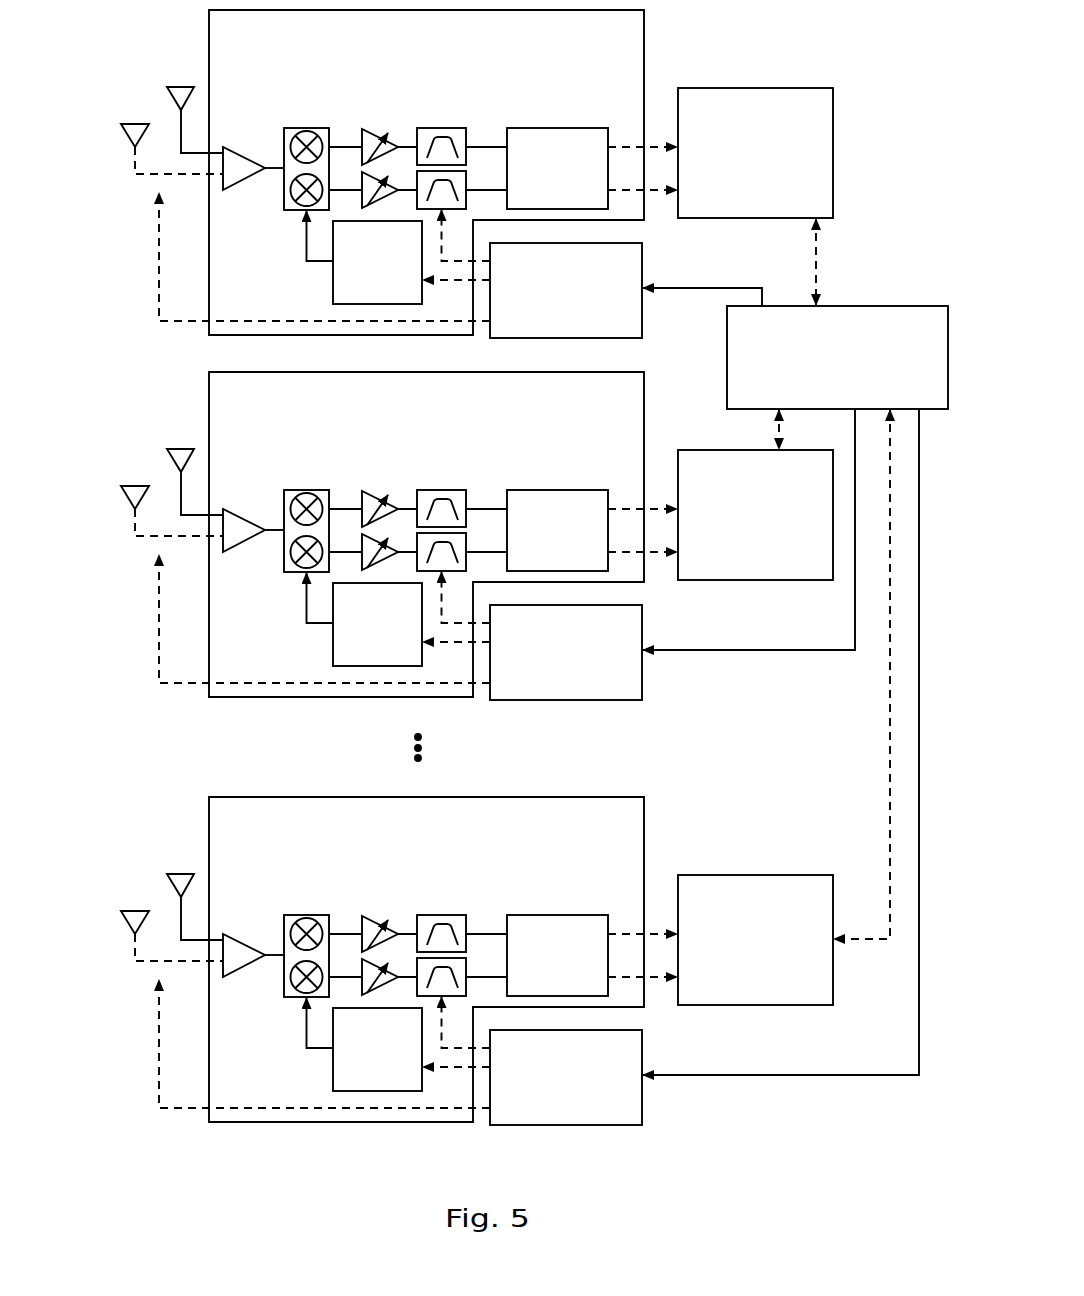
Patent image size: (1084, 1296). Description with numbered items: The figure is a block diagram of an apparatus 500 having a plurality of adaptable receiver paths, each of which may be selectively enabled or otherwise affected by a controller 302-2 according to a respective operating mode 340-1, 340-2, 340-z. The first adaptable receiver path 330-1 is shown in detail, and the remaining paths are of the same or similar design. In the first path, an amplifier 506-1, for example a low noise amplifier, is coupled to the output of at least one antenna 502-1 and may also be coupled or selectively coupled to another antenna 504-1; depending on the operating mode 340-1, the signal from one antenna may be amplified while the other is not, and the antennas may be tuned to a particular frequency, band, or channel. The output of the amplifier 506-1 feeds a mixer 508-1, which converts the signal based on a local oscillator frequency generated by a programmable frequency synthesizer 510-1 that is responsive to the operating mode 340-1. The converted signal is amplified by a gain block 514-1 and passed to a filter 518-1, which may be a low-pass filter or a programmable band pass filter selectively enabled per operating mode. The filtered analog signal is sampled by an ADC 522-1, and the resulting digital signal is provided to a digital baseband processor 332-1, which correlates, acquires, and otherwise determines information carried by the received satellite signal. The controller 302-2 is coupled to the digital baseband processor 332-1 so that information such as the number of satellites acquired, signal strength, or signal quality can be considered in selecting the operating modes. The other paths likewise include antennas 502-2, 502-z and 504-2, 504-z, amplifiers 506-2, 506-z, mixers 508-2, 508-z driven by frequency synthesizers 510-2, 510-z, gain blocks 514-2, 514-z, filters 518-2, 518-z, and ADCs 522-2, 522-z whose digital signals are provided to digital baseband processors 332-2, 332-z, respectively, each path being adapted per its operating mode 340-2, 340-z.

The apparatus 500 is at (781, 32).
The adaptable receiver path 330-1 is at (371, 174).
The controller 302-2 is at (807, 398).
The digital baseband processor 332-1 is at (725, 205).
The digital baseband processor 332-2 is at (755, 515).
The digital baseband processor 332-z is at (755, 940).
The operating mode 340-1 is at (630, 318).
The operating mode 340-2 is at (400, 627).
The operating mode 340-z is at (400, 1052).
The antenna 502-1 is at (157, 103).
The antenna 502-2 is at (157, 465).
The antenna 502-z is at (157, 890).
The antenna 504-1 is at (144, 134).
The antenna 504-2 is at (144, 496).
The antenna 504-z is at (144, 921).
The amplifier 506-1 is at (271, 130).
The amplifier 506-2 is at (271, 492).
The amplifier 506-z is at (271, 917).
The mixer 508-1 is at (334, 149).
The mixer 508-2 is at (334, 511).
The mixer 508-z is at (334, 936).
The frequency synthesizer 510-1 is at (326, 258).
The frequency synthesizer 510-2 is at (326, 620).
The frequency synthesizer 510-z is at (326, 1045).
The gain block 514-1 is at (423, 132).
The gain block 514-2 is at (423, 494).
The gain block 514-z is at (423, 919).
The filter 518-1 is at (469, 148).
The filter 518-2 is at (469, 510).
The filter 518-z is at (468, 935).
The ADC 522-1 is at (592, 150).
The ADC 522-2 is at (592, 512).
The ADC 522-z is at (592, 937).